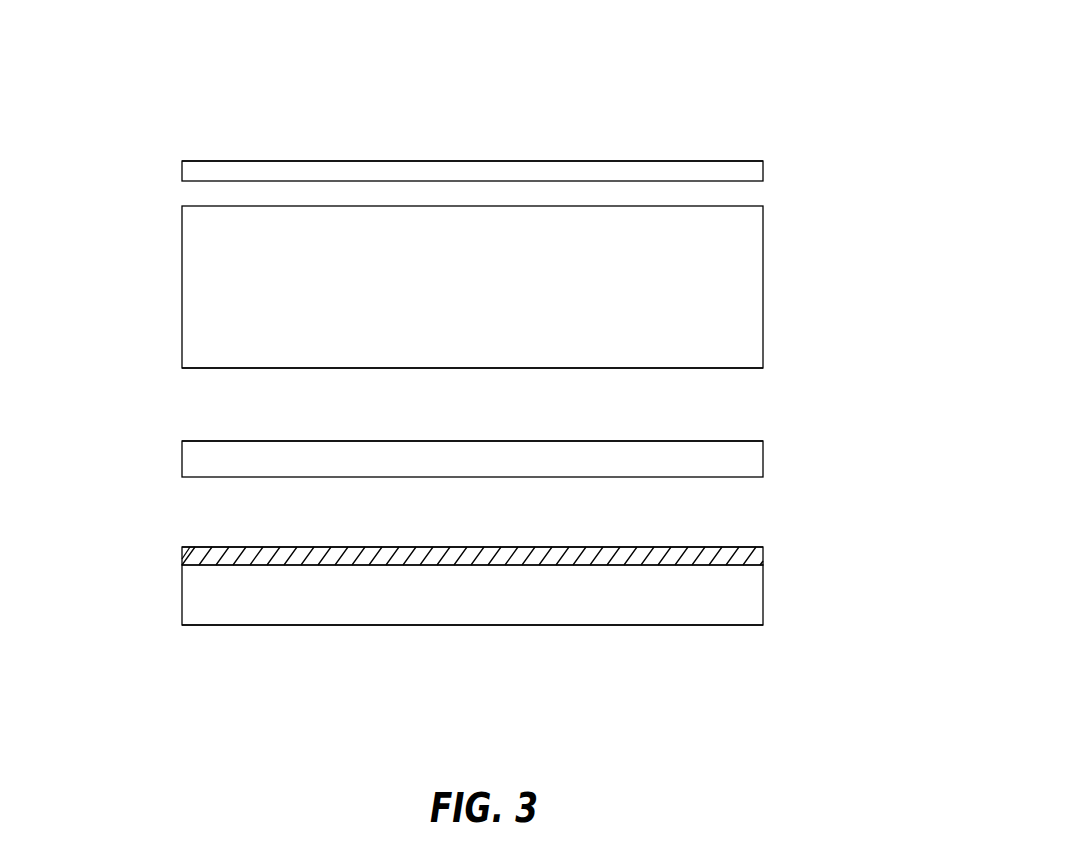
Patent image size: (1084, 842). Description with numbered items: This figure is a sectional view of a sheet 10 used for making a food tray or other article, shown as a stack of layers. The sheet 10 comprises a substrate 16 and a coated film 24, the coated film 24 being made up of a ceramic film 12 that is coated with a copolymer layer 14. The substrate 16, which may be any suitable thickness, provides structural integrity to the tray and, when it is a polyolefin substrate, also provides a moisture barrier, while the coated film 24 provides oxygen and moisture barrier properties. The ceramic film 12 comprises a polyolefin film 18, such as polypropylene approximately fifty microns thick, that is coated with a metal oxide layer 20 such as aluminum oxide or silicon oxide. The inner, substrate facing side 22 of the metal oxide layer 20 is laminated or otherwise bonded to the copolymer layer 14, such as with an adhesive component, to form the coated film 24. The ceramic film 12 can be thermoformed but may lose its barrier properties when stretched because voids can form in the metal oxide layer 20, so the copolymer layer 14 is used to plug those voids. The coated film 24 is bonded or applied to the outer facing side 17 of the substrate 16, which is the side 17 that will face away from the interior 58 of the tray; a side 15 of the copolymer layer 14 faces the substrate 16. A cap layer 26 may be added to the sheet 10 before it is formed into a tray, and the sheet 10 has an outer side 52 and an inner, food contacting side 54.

The sheet 10 is at (745, 67).
The ceramic film 12 is at (172, 547).
The copolymer layer 14 is at (764, 459).
The top surface of release layer 15 is at (470, 441).
The substrate 16 is at (764, 290).
The outer facing side 17 is at (470, 369).
The polyolefin film 18 is at (764, 591).
The metal oxide layer 20 is at (764, 555).
The substrate facing side 22 is at (472, 547).
The coated film 24 is at (123, 443).
The cap layer 26 is at (764, 173).
The outer side 52 is at (473, 626).
The inner side 54 is at (472, 161).
The interior 58 is at (448, 117).